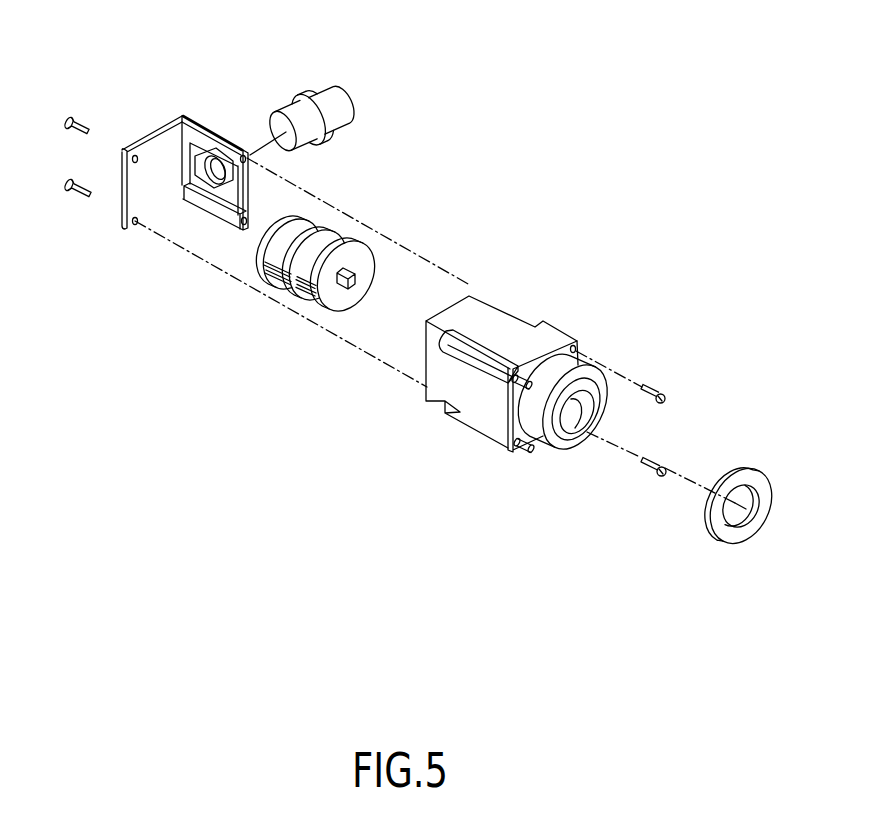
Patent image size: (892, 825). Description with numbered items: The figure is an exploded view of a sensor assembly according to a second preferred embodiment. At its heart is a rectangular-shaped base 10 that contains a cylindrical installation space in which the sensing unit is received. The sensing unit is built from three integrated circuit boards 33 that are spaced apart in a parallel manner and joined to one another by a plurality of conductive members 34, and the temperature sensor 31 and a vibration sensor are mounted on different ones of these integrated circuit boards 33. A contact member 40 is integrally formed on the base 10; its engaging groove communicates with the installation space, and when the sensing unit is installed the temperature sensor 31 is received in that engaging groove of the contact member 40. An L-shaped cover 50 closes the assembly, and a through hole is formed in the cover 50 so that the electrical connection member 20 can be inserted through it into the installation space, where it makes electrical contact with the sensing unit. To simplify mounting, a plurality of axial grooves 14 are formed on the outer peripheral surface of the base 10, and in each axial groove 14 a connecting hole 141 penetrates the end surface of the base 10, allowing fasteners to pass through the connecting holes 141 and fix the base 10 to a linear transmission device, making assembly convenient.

The cover 50 is at (168, 122).
The electrical connection member 20 is at (323, 87).
The integrated circuit board 33 is at (360, 253).
The conductive member 34 is at (298, 285).
The temperature sensor 31 is at (347, 288).
The base 10 is at (563, 323).
The contact member 40 is at (580, 372).
The axial groove 14 is at (480, 370).
The connecting hole 141 is at (511, 440).